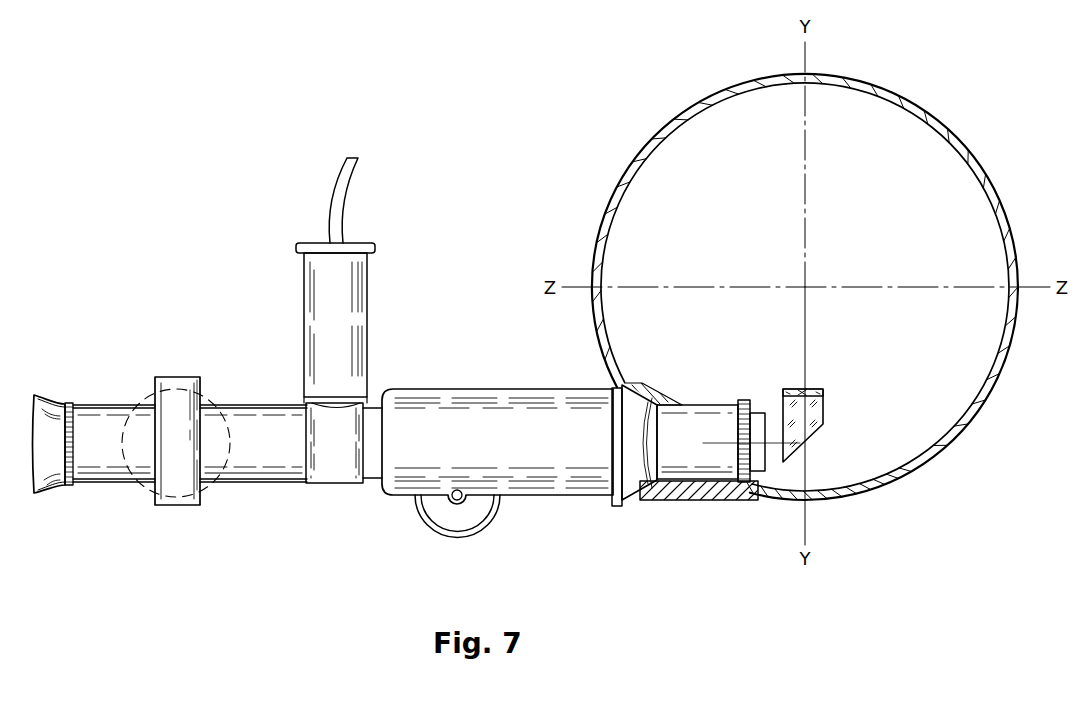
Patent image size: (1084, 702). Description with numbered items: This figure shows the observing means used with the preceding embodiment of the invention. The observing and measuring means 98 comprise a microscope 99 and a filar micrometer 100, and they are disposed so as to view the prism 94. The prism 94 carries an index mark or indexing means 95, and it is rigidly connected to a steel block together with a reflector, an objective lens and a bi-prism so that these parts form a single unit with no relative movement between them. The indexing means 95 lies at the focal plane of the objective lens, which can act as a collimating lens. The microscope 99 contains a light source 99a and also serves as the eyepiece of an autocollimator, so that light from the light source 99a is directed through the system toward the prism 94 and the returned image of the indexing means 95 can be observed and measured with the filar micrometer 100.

The prism 94 is at (813, 423).
The indexing means 95 is at (802, 393).
The observing and measuring means 98 is at (547, 497).
The microscope 99 is at (397, 495).
The light source 99a is at (352, 333).
The filar micrometer 100 is at (175, 493).